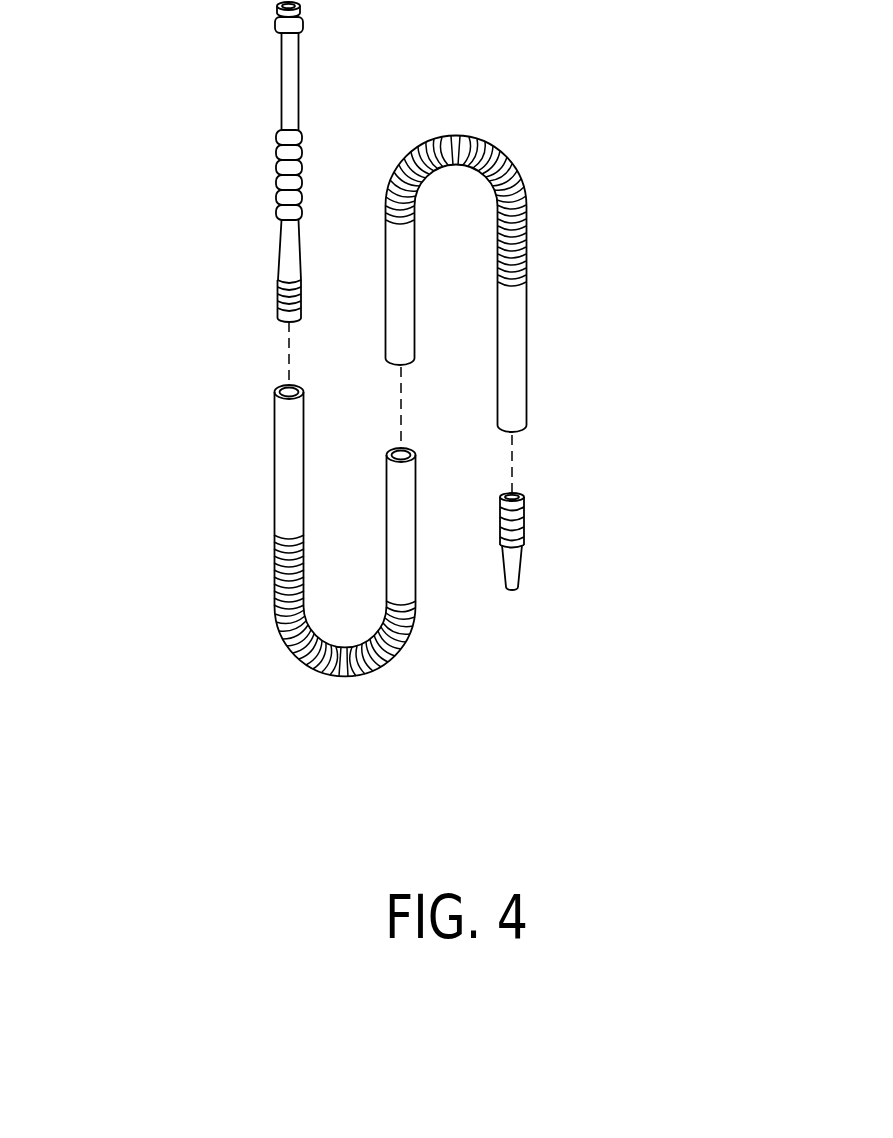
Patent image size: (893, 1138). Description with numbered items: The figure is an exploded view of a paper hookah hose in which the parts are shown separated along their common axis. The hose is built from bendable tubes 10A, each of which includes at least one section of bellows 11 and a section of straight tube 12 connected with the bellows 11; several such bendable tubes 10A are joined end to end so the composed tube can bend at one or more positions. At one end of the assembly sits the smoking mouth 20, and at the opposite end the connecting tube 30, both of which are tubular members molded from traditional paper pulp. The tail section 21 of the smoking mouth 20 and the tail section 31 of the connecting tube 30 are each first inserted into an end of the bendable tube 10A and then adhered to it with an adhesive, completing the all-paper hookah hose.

The bendable tube 10A is at (483, 150).
The bellows 11 is at (495, 193).
The straight tube 12 is at (292, 455).
The smoking mouth 20 is at (285, 88).
The tail section of the smoking mouth 21 is at (282, 303).
The connecting tube 30 is at (528, 567).
The tail section of the connecting tube 31 is at (525, 517).